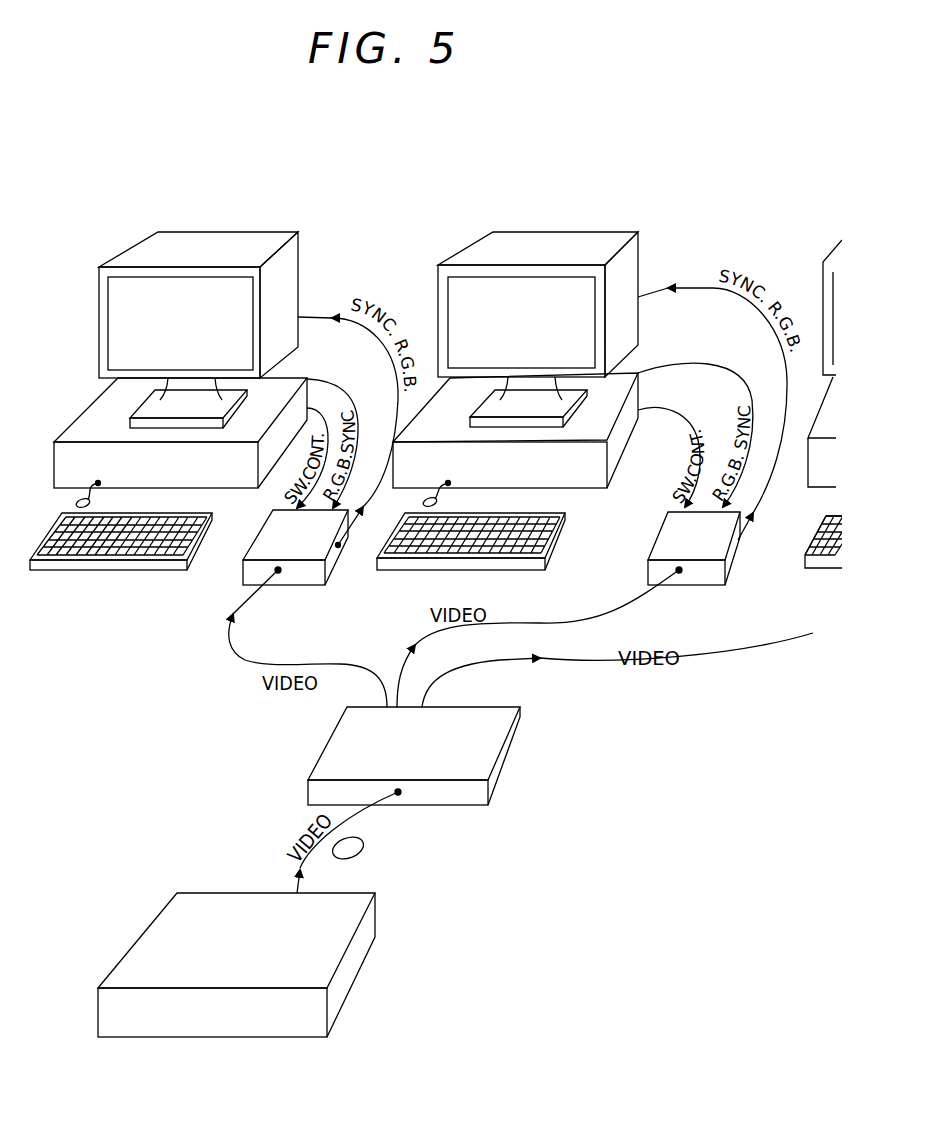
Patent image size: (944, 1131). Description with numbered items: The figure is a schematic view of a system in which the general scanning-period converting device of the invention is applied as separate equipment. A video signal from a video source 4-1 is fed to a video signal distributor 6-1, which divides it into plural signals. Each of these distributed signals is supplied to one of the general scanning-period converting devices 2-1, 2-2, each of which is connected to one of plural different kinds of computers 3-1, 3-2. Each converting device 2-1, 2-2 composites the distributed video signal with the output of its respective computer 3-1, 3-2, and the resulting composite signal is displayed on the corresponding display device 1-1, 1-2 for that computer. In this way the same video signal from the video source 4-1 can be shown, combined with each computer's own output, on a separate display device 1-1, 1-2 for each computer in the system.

The display device 1-1 is at (253, 240).
The display device 1-2 is at (592, 242).
The computer 3-1 is at (100, 417).
The computer 3-2 is at (638, 370).
The general scanning-period converting device 2-1 is at (305, 577).
The general scanning-period converting device 2-2 is at (710, 573).
The video signal distributor 6-1 is at (475, 797).
The video source 4-1 is at (357, 963).